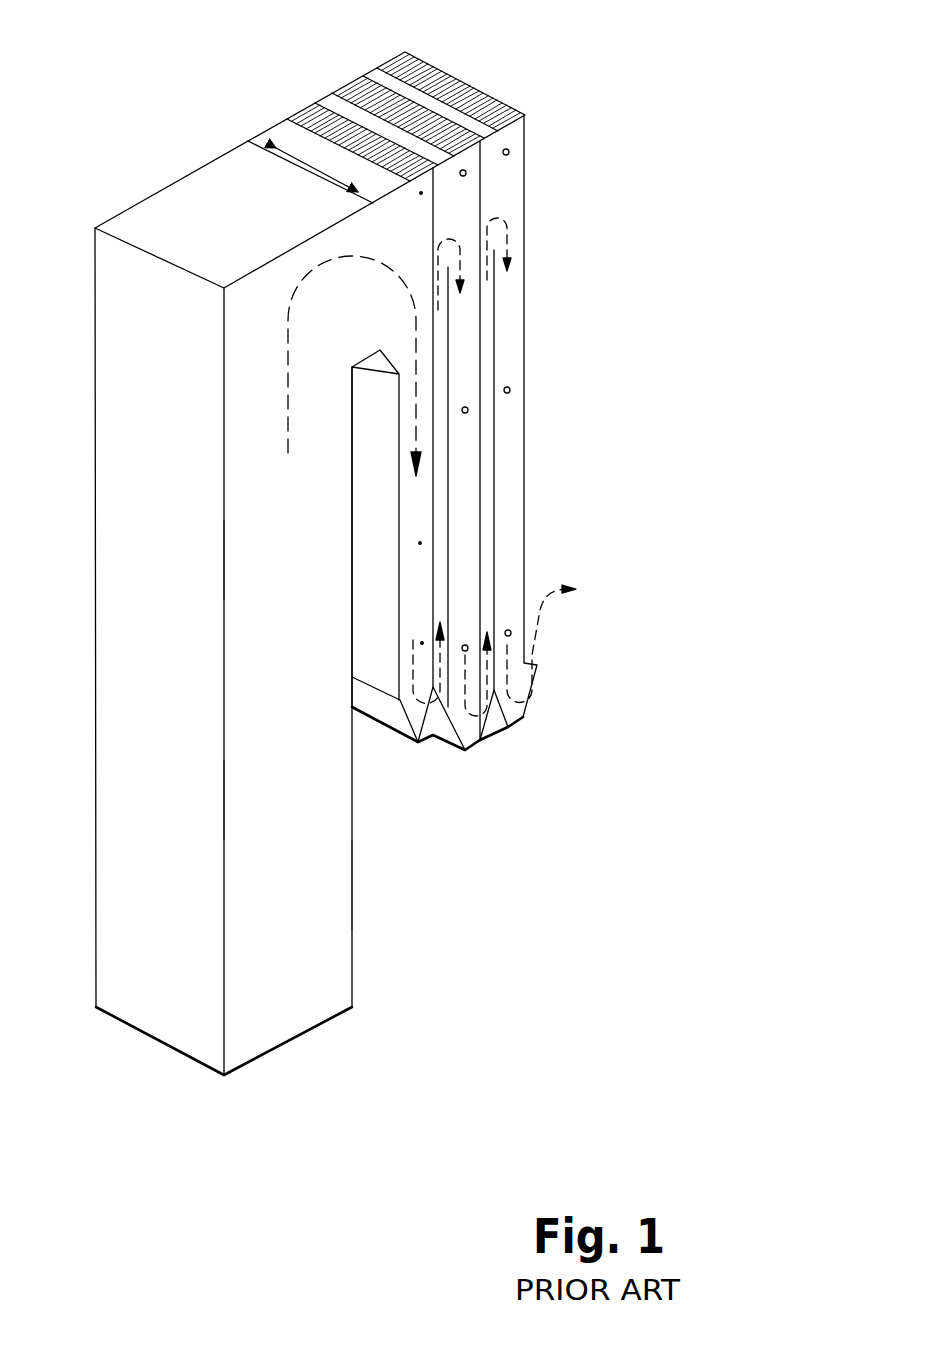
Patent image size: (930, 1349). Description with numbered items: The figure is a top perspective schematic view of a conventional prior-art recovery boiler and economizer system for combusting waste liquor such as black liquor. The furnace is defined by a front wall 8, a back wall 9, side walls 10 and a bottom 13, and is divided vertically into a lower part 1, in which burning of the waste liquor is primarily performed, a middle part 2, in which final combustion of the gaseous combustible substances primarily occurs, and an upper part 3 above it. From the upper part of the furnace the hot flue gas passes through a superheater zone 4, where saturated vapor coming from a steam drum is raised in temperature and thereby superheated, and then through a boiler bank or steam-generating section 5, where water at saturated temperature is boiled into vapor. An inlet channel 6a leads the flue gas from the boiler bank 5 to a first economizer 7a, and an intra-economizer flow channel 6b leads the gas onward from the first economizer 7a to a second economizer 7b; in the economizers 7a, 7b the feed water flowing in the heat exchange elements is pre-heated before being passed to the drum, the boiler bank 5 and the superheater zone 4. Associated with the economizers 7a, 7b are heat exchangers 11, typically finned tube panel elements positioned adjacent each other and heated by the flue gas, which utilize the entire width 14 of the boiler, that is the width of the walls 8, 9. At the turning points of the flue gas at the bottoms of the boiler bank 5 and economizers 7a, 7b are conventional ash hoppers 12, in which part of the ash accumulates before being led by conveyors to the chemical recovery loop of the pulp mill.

The lower part of the furnace 1 is at (299, 950).
The middle part of the furnace 2 is at (299, 815).
The upper part of the furnace 3 is at (299, 575).
The superheater zone 4 is at (329, 372).
The boiler bank 5 is at (418, 585).
The inlet channel 6a is at (443, 537).
The intra-economizer flow channel 6b is at (488, 333).
The first economizer 7a is at (463, 585).
The second economizer 7b is at (517, 443).
The front wall 8 is at (148, 1020).
The back wall 9 is at (354, 886).
The side walls 10 is at (288, 1022).
The heat exchangers 11 is at (490, 110).
The ash hoppers 12 is at (428, 727).
The bottom 13 is at (193, 1063).
The width of the boiler 14 is at (310, 167).